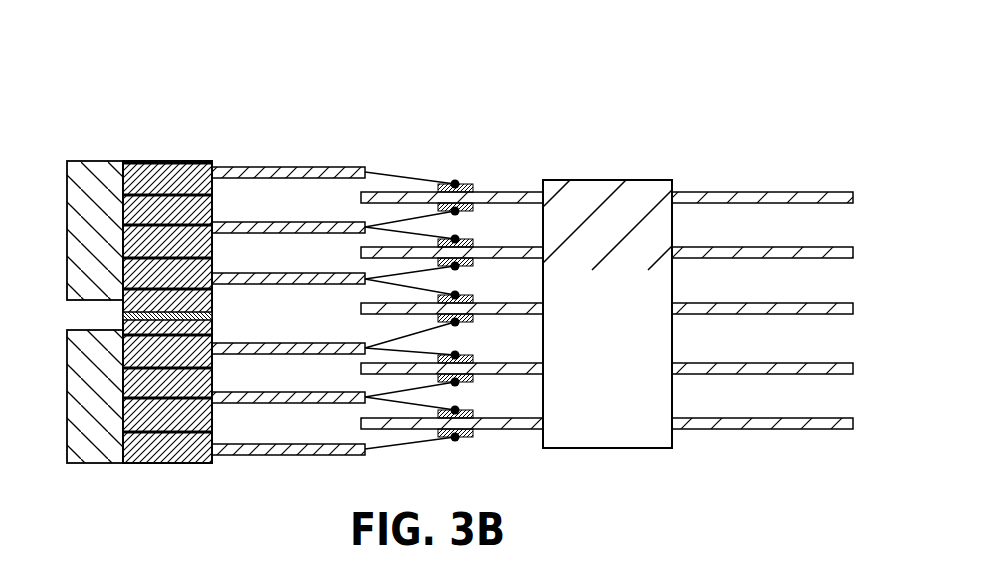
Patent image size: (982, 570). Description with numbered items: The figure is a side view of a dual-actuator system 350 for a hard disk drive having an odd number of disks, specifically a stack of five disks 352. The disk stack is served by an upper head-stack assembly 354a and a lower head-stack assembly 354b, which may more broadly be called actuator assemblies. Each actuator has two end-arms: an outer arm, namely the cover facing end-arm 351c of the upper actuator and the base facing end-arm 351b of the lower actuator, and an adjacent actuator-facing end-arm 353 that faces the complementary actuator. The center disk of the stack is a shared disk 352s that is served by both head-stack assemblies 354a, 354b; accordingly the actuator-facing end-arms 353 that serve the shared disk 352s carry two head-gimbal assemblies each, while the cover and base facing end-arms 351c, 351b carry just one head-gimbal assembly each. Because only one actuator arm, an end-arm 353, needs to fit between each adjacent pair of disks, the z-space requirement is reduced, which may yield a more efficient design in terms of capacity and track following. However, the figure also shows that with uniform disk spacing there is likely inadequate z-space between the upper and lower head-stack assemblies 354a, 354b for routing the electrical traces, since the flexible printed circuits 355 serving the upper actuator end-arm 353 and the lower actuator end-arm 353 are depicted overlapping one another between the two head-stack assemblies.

The dual-actuator system 350 is at (131, 133).
The upper head-stack assembly 354a is at (82, 208).
The lower head-stack assembly 354b is at (82, 403).
The actuator-facing end-arm 353 is at (250, 279).
The flexible printed circuit 355 is at (123, 323).
The cover facing end-arm 351c is at (277, 167).
The base facing end-arm 351b is at (283, 455).
The disks 352 is at (858, 192).
The shared disk 352s is at (515, 315).